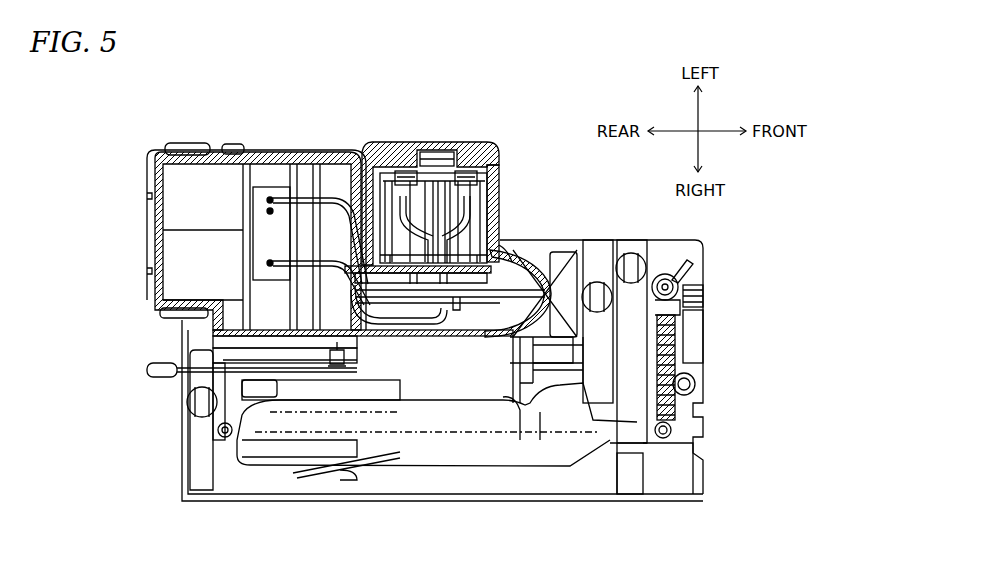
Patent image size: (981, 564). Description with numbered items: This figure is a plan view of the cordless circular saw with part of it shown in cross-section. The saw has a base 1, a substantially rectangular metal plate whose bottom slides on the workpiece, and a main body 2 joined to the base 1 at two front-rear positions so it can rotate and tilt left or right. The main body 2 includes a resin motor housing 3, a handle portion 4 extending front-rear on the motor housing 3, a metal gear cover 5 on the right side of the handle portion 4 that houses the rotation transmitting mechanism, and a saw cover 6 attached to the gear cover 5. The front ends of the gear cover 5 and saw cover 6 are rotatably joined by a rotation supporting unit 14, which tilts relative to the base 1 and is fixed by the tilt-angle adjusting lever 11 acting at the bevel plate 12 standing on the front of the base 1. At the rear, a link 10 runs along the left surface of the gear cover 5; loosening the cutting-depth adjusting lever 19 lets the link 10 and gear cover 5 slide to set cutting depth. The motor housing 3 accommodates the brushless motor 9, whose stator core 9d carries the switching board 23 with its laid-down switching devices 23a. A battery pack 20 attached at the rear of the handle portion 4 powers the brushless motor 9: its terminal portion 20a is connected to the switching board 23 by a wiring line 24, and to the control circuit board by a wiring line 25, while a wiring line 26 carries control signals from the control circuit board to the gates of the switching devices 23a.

The base 1 is at (704, 498).
The main body 2 is at (414, 140).
The motor housing 3 is at (480, 237).
The handle portion 4 is at (553, 250).
The gear cover 5 is at (520, 370).
The saw cover 6 is at (495, 457).
The brushless motor 9 is at (497, 212).
The stator core 9d is at (512, 258).
The link 10 is at (240, 397).
The tilt-angle adjusting lever 11 is at (700, 312).
The bevel plate 12 is at (680, 362).
The rotation supporting unit 14 is at (628, 442).
The cutting-depth adjusting lever 19 is at (147, 369).
The battery pack 20 is at (145, 168).
The terminal portion 20a is at (271, 192).
The switching board 23 is at (463, 177).
The switching devices 23a is at (483, 180).
The wiring line 24 is at (349, 190).
The wiring line 25 is at (293, 196).
The wiring line 26 is at (446, 210).